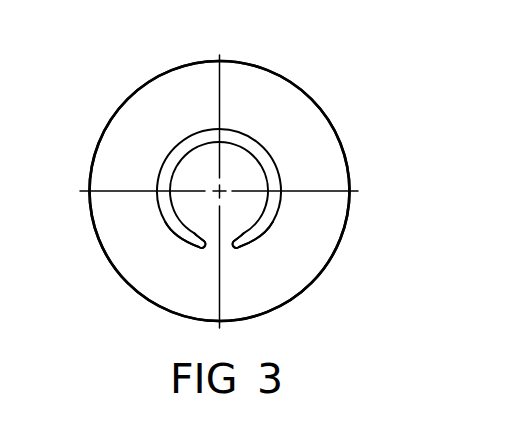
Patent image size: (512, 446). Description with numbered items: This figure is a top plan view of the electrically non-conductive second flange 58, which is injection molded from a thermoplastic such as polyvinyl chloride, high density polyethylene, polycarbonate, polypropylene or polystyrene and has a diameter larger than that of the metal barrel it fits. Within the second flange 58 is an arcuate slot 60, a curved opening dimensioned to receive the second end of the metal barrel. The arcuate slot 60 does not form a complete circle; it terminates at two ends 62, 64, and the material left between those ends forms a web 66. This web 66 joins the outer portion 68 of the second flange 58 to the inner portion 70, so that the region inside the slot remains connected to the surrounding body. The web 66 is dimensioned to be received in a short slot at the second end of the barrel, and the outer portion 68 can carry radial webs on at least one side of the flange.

The second flange 58 is at (360, 128).
The arcuate slot 60 is at (262, 158).
The end of the arcuate slot 62 is at (196, 243).
The end of the arcuate slot 64 is at (240, 243).
The web 66 is at (212, 245).
The outer portion 68 is at (137, 133).
The inner portion 70 is at (237, 160).